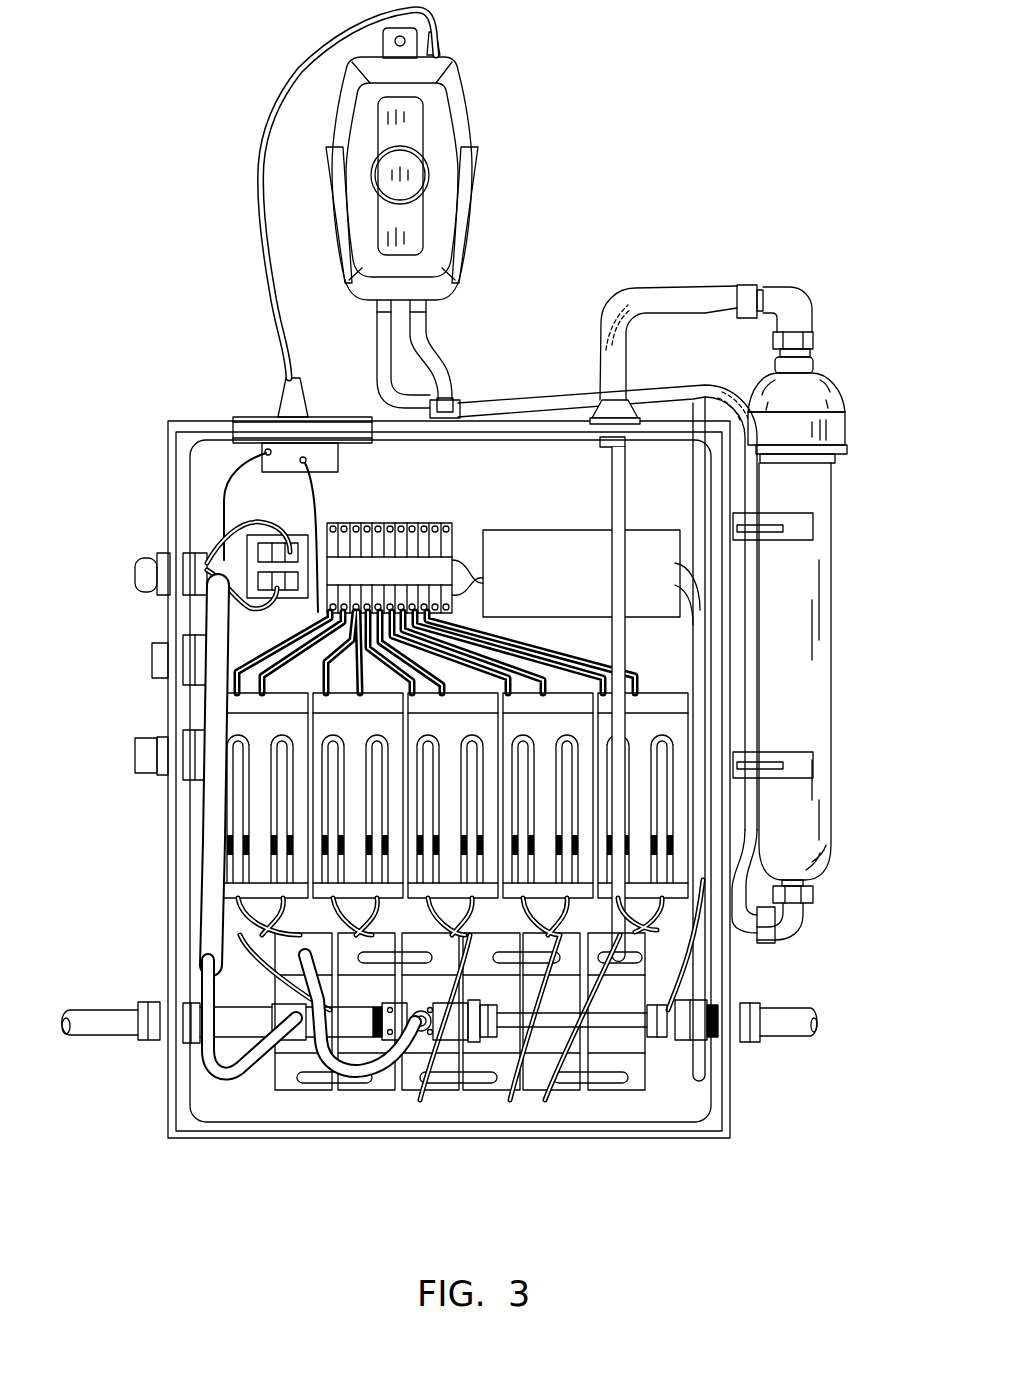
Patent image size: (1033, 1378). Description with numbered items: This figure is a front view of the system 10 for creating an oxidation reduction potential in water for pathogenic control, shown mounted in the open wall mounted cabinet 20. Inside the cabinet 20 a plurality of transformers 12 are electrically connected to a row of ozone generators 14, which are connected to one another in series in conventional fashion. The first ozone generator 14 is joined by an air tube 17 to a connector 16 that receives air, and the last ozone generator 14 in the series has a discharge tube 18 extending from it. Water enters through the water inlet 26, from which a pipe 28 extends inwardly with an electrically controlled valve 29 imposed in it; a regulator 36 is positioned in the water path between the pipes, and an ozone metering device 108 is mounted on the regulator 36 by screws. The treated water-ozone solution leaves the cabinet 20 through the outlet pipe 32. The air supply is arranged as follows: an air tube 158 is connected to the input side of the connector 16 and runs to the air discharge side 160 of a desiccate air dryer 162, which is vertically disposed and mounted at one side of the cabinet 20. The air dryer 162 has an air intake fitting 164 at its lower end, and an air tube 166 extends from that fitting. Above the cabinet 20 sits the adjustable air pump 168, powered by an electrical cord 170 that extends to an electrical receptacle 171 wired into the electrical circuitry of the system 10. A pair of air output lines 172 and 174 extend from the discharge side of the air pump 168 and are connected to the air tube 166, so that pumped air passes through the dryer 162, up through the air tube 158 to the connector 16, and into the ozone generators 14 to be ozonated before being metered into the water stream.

The system 10 is at (129, 790).
The transformers 12 is at (538, 574).
The ozone generators 14 is at (295, 948).
The connector 16 is at (603, 400).
The air tube 17 is at (630, 552).
The discharge tube 18 is at (378, 1070).
The cabinet 20 is at (688, 430).
The water inlet 26 is at (150, 1000).
The pipe 28 is at (233, 1020).
The electrical controlled valve 29 is at (308, 1055).
The water-ozone solution outlet pipe 32 is at (778, 1025).
The regulator 36 is at (453, 1027).
The ozone metering device 108 is at (410, 1045).
The air tube 158 is at (668, 290).
The air discharge side 160 is at (808, 352).
The desiccate air dryer 162 is at (830, 623).
The air intake fitting 164 is at (812, 890).
The air tube 166 is at (752, 436).
The air pump 168 is at (472, 120).
The electrical cord 170 is at (275, 95).
The electrical receptacle 171 is at (284, 452).
The air output line 172 is at (378, 338).
The air output line 174 is at (440, 343).